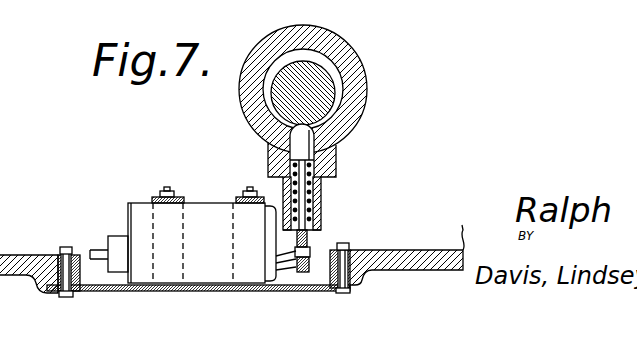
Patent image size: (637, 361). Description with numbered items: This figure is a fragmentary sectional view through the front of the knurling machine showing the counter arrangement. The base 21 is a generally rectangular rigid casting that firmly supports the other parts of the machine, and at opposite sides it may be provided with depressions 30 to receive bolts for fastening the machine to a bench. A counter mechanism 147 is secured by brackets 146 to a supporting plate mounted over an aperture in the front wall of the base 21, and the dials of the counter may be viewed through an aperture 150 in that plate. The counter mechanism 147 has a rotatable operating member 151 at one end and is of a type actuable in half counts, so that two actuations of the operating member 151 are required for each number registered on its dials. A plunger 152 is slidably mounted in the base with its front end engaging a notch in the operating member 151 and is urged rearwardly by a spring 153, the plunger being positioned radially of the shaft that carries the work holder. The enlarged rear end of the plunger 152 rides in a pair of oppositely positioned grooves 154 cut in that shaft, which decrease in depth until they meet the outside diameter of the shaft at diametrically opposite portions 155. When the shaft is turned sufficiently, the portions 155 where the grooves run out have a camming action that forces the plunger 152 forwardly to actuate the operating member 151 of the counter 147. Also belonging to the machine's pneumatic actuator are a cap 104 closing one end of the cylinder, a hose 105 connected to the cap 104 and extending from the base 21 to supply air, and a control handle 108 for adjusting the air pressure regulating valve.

The base 21 is at (23, 255).
The depressions 30 is at (300, 58).
The cap 104 is at (83, 250).
The hose 105 is at (318, 291).
The control handle 108 is at (517, 0).
The brackets 146 is at (183, 197).
The counter mechanism 147 is at (137, 203).
The aperture 150 is at (262, 290).
The rotatable operating member 151 is at (310, 265).
The plunger 152 is at (322, 197).
The spring 153 is at (268, 178).
The grooves 154 is at (318, 82).
The portions 155 is at (355, 95).